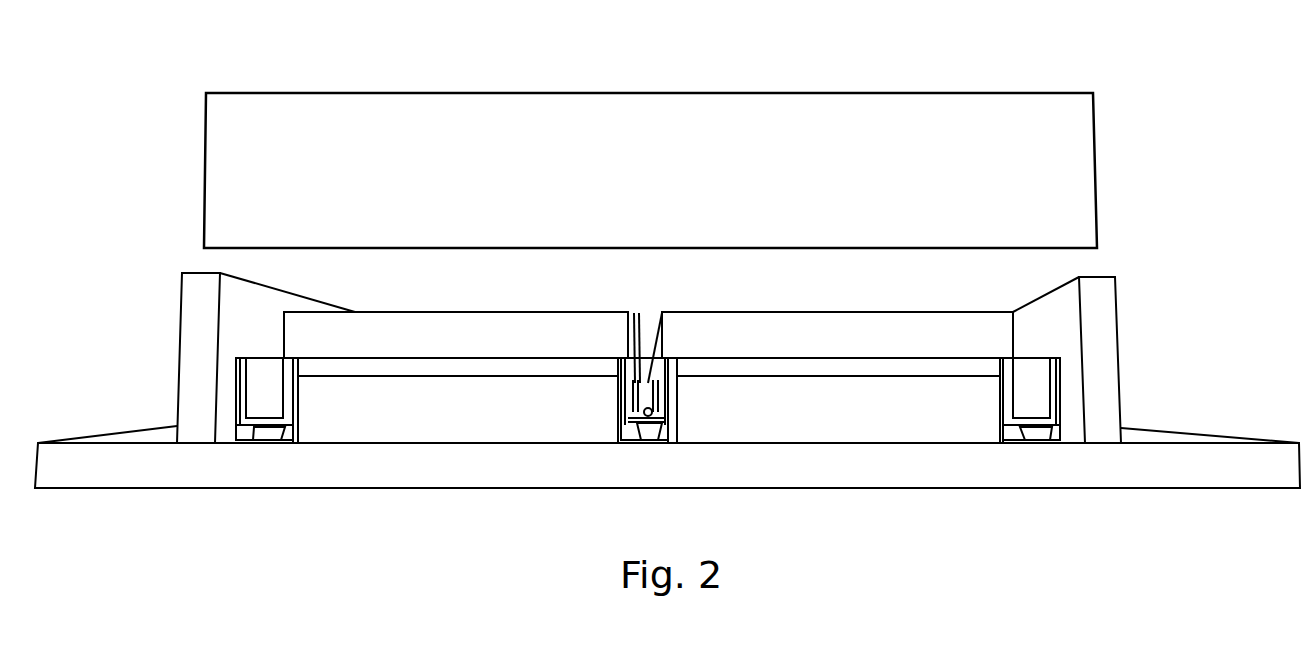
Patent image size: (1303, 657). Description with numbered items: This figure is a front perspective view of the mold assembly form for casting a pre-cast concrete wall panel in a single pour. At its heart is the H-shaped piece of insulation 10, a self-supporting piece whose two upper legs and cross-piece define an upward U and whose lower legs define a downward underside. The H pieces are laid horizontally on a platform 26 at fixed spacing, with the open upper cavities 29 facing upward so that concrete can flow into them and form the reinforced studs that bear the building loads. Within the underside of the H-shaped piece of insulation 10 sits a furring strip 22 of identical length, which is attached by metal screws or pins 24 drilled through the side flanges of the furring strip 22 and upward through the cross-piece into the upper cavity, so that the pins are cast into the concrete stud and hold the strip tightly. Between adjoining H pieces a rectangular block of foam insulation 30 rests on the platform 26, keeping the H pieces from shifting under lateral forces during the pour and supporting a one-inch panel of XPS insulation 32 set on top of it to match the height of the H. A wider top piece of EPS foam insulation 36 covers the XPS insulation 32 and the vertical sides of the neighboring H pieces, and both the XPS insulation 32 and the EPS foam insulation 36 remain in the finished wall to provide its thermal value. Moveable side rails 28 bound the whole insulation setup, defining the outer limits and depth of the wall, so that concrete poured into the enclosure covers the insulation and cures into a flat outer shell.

The H-shaped piece of insulation 10 is at (298, 393).
The furring strip 22 is at (263, 432).
The metal screws or pins 24 is at (641, 383).
The platform 26 is at (900, 473).
The side rails 28 is at (895, 125).
The open upper cavities 29 is at (266, 383).
The block of foam insulation 30 is at (398, 390).
The panel of XPS insulation 32 is at (517, 365).
The EPS foam insulation 36 is at (557, 332).